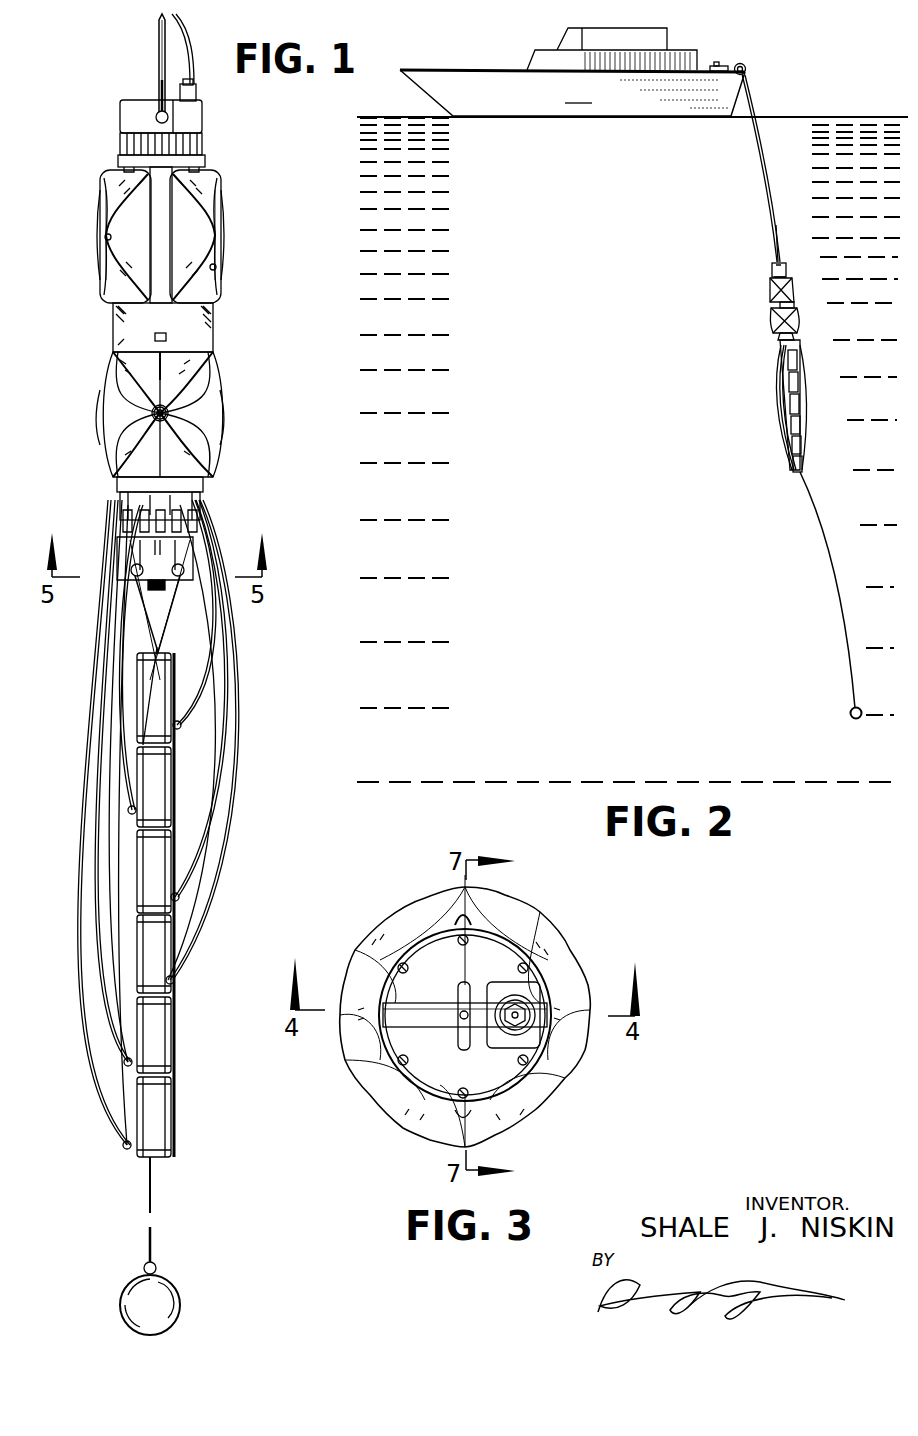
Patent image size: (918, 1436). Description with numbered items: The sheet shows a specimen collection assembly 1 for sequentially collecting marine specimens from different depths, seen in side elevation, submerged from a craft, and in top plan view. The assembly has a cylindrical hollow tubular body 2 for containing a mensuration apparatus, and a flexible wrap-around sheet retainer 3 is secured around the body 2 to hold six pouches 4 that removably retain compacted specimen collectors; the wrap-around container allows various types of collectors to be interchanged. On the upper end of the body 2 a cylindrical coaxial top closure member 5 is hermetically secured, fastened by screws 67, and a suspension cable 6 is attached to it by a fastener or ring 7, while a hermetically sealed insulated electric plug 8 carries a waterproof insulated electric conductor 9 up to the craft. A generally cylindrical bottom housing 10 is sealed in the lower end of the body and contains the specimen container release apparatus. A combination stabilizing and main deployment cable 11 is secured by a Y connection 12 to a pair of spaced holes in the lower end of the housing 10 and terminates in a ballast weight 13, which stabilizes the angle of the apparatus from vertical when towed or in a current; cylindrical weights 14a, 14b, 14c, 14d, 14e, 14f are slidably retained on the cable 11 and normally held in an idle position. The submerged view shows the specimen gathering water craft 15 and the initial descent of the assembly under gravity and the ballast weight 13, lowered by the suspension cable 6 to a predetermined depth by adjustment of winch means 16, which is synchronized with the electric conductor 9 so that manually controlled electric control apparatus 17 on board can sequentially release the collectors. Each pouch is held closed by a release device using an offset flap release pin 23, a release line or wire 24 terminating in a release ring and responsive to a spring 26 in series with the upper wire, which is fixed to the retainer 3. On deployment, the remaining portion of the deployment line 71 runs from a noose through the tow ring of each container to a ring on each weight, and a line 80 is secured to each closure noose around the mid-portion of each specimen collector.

In FIG. 1, the specimen collection assembly 1 is at (240, 319).
In FIG. 2, the specimen collection assembly 1 is at (735, 312).
In FIG. 1, the cylindrical hollow tubular body 2 is at (118, 156).
In FIG. 1, the flexible wrap-around sheet retainer 3 is at (120, 324).
In FIG. 1, the pouch 4 is at (80, 199).
In FIG. 2, the pouch 4 is at (745, 276).
In FIG. 3, the pouch 4 is at (420, 870).
In FIG. 1, the top closure member 5 is at (220, 124).
In FIG. 3, the top closure member 5 is at (435, 950).
In FIG. 1, the suspension cable 6 is at (158, 24).
In FIG. 2, the suspension cable 6 is at (774, 226).
In FIG. 3, the suspension cable 6 is at (458, 1012).
In FIG. 1, the fastener or ring 7 is at (158, 86).
In FIG. 3, the fastener or ring 7 is at (458, 1040).
In FIG. 1, the electric plug 8 is at (198, 90).
In FIG. 3, the electric plug 8 is at (505, 998).
In FIG. 1, the electric conductor 9 is at (188, 38).
In FIG. 2, the electric conductor 9 is at (777, 202).
In FIG. 3, the electric conductor 9 is at (513, 1022).
In FIG. 1, the bottom housing 10 is at (232, 504).
In FIG. 1, the stabilizing and main deployment cable 11 is at (154, 1237).
In FIG. 2, the stabilizing and main deployment cable 11 is at (822, 560).
In FIG. 1, the Y connection 12 is at (178, 622).
In FIG. 1, the ballast weight 13 is at (172, 1288).
In FIG. 2, the ballast weight 13 is at (850, 716).
In FIG. 1, the cylindrical weight 14a is at (155, 698).
In FIG. 2, the cylindrical weight 14a is at (788, 365).
In FIG. 1, the cylindrical weight 14b is at (155, 785).
In FIG. 2, the cylindrical weight 14b is at (790, 383).
In FIG. 1, the cylindrical weight 14c is at (155, 870).
In FIG. 2, the cylindrical weight 14c is at (800, 402).
In FIG. 1, the cylindrical weight 14d is at (152, 952).
In FIG. 2, the cylindrical weight 14d is at (801, 424).
In FIG. 1, the cylindrical weight 14e is at (152, 1036).
In FIG. 2, the cylindrical weight 14e is at (802, 444).
In FIG. 1, the cylindrical weight 14f is at (155, 1132).
In FIG. 2, the cylindrical weight 14f is at (803, 462).
In FIG. 2, the water craft 15 is at (572, 72).
In FIG. 2, the winch means 16 is at (770, 47).
In FIG. 2, the electric control apparatus 17 is at (704, 52).
In FIG. 1, the offset flap release pin 23 is at (130, 415).
In FIG. 1, the release line or wire 24 is at (108, 258).
In FIG. 3, the release line or wire 24 is at (368, 952).
In FIG. 1, the spring 26 is at (160, 380).
In FIG. 3, the spring 26 is at (470, 905).
In FIG. 3, the screws 67 is at (405, 973).
In FIG. 1, the deployment line 71 is at (200, 832).
In FIG. 1, the line 80 is at (190, 918).